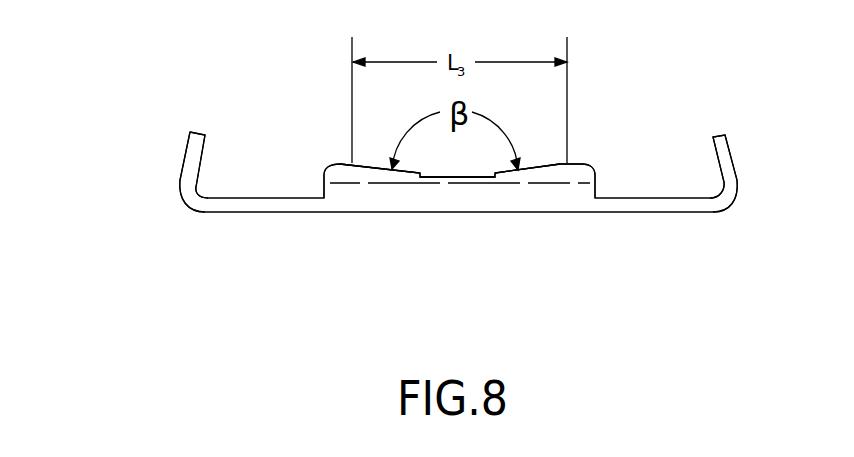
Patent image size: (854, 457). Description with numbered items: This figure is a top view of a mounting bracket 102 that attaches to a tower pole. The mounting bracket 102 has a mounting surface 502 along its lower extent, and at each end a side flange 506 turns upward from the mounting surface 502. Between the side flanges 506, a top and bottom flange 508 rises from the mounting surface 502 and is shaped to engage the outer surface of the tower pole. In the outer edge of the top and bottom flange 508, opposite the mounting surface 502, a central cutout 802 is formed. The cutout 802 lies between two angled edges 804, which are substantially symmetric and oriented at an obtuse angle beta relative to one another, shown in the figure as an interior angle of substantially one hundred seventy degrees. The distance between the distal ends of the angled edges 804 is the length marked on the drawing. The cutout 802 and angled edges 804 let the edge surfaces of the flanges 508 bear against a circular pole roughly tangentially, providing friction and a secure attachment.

The mounting bracket 102 is at (165, 273).
The mounting surface 502 is at (278, 200).
The side flanges 506 is at (184, 162).
The top and bottom flanges 508 is at (325, 172).
The cutout 802 is at (450, 177).
The angled edges 804 is at (380, 165).